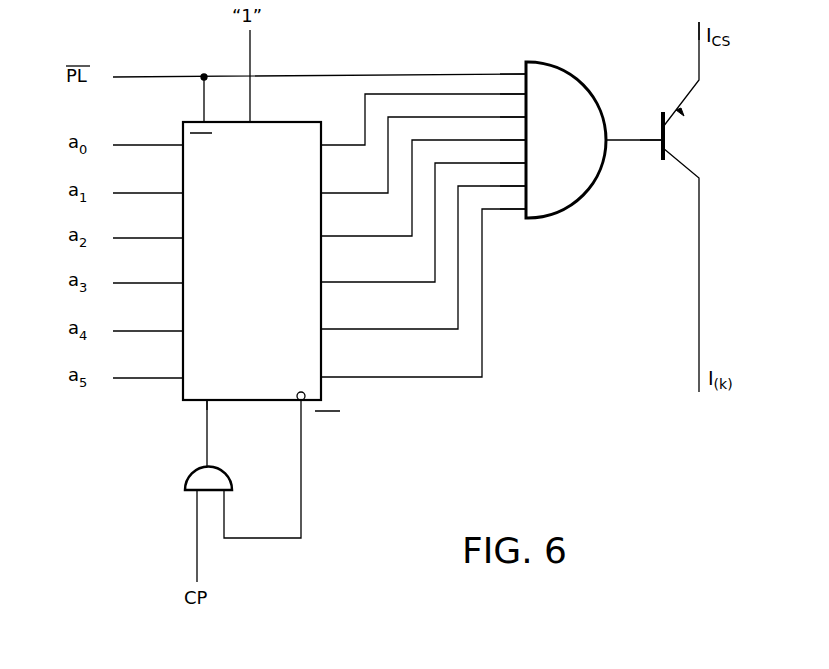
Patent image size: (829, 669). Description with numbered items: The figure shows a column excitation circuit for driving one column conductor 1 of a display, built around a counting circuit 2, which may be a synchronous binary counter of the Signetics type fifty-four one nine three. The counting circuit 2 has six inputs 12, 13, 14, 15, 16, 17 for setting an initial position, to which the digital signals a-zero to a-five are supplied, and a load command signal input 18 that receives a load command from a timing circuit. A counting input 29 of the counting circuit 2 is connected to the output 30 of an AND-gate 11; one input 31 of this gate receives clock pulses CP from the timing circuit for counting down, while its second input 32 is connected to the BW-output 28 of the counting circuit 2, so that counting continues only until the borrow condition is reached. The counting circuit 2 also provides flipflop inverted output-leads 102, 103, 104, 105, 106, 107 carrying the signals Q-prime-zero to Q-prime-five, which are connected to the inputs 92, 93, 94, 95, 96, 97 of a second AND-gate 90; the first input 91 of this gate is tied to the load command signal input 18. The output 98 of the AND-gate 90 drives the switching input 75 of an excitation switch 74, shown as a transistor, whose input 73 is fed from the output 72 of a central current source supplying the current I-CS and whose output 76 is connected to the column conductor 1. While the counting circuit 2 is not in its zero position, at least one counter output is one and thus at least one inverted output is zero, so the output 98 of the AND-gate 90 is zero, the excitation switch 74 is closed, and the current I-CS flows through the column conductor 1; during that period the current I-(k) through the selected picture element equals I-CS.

The column conductor 1 is at (700, 272).
The counting circuit 2 is at (274, 122).
The AND-gate 11 is at (185, 482).
The input 12 is at (183, 143).
The input 13 is at (183, 191).
The input 14 is at (183, 236).
The input 15 is at (183, 281).
The input 16 is at (183, 329).
The input 17 is at (183, 376).
The load command signal input 18 is at (204, 118).
The BW-output 28 is at (298, 402).
The counting input 29 is at (206, 402).
The output 30 is at (206, 466).
The input 31 is at (197, 492).
The second input 32 is at (224, 492).
The output 72 is at (699, 32).
The input 73 is at (688, 103).
The excitation switch 74 is at (664, 112).
The switching input 75 is at (661, 139).
The output 76 is at (699, 182).
The AND-gate 90 is at (584, 82).
The first input 91 is at (524, 72).
The input 92 is at (524, 93).
The input 93 is at (524, 116).
The input 94 is at (524, 139).
The input 95 is at (524, 162).
The input 96 is at (524, 185).
The input 97 is at (524, 208).
The output 98 is at (606, 142).
The inverted output-lead 102 is at (323, 145).
The inverted output-lead 103 is at (323, 193).
The inverted output-lead 104 is at (323, 236).
The inverted output-lead 105 is at (323, 282).
The inverted output-lead 106 is at (323, 329).
The inverted output-lead 107 is at (323, 377).